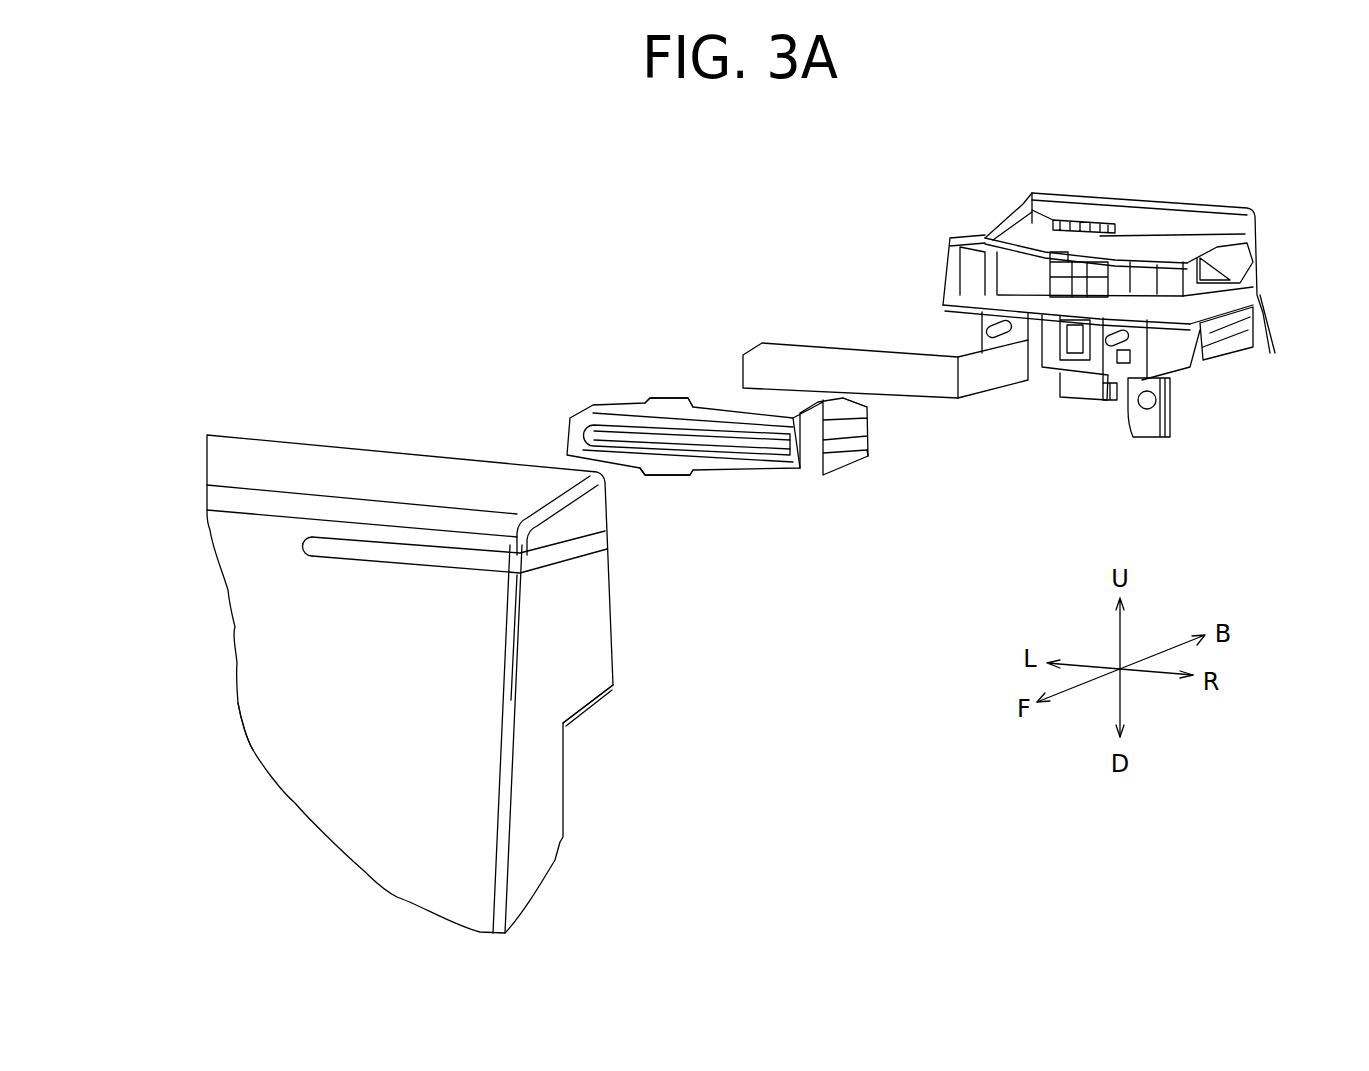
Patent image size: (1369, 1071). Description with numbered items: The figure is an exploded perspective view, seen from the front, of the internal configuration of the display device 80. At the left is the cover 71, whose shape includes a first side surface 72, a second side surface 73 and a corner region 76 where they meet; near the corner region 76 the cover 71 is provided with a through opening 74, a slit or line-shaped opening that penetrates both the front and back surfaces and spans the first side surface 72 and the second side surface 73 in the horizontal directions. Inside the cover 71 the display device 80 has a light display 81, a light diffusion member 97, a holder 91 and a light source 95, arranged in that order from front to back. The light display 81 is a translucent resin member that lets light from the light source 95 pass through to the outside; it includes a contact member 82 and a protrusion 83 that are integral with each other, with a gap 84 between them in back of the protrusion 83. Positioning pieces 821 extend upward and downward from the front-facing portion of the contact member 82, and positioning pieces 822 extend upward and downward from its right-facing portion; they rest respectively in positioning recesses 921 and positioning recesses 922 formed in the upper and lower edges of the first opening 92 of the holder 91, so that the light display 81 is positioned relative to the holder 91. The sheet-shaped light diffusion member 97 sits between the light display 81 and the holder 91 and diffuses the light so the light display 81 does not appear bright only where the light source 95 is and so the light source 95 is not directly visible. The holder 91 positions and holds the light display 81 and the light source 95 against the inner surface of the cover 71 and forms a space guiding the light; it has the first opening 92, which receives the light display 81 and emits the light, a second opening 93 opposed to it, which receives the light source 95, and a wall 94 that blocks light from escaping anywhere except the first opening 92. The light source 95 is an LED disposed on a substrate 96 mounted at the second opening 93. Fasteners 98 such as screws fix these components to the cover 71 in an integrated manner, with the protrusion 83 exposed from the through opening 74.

The cover 71 is at (277, 438).
The first side surface 72 is at (342, 727).
The second side surface 73 is at (573, 652).
The through opening 74 is at (337, 557).
The corner region 76 is at (517, 608).
The display device 80 is at (780, 434).
The light display 81 is at (742, 434).
The contact member 82 is at (727, 475).
The protrusion 83 is at (615, 423).
The gap 84 is at (810, 455).
The positioning pieces 821 is at (668, 400).
The positioning pieces 822 is at (870, 460).
The holder 91 is at (1222, 217).
The first opening 92 is at (947, 282).
The second opening 93 is at (1085, 263).
The wall 94 is at (1157, 327).
The light source 95 is at (1058, 245).
The substrate 96 is at (1067, 400).
The light diffusion member 97 is at (822, 355).
The fasteners 98 is at (1118, 400).
The positioning recesses 921 is at (1045, 243).
The positioning recesses 922 is at (1252, 255).